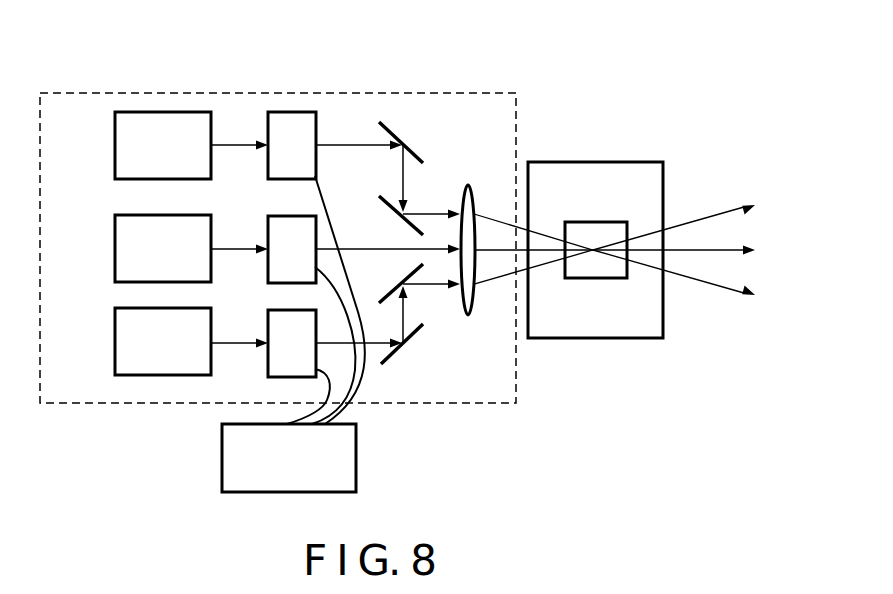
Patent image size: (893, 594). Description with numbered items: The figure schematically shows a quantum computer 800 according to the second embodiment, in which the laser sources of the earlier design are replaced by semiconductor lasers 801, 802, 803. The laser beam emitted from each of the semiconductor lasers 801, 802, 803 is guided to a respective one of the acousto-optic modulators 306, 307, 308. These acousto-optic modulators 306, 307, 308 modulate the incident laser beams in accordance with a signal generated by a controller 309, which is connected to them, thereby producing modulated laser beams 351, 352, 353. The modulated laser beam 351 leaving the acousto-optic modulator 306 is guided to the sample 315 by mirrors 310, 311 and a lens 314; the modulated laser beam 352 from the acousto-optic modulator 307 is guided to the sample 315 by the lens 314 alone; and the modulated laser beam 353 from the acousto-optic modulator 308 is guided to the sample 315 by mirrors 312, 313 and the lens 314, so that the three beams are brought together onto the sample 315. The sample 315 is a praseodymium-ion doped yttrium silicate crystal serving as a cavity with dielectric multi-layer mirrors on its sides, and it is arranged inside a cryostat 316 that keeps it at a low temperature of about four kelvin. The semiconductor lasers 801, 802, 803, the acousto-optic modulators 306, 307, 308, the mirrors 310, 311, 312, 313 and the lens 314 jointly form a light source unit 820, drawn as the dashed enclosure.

The quantum computer 800 is at (162, 64).
The light source unit 820 is at (488, 93).
The semiconductor laser 801 is at (115, 145).
The semiconductor laser 802 is at (115, 249).
The semiconductor laser 803 is at (115, 343).
The acousto-optic modulator 306 is at (292, 112).
The acousto-optic modulator 307 is at (272, 283).
The acousto-optic modulator 308 is at (270, 377).
The controller 309 is at (222, 460).
The mirror 310 is at (383, 119).
The mirror 311 is at (406, 227).
The mirror 312 is at (412, 335).
The mirror 313 is at (397, 288).
The lens 314 is at (466, 188).
The sample 315 is at (597, 228).
The cryostat 316 is at (594, 162).
The modulated laser beam 351 is at (502, 220).
The modulated laser beam 352 is at (520, 252).
The modulated laser beam 353 is at (492, 284).